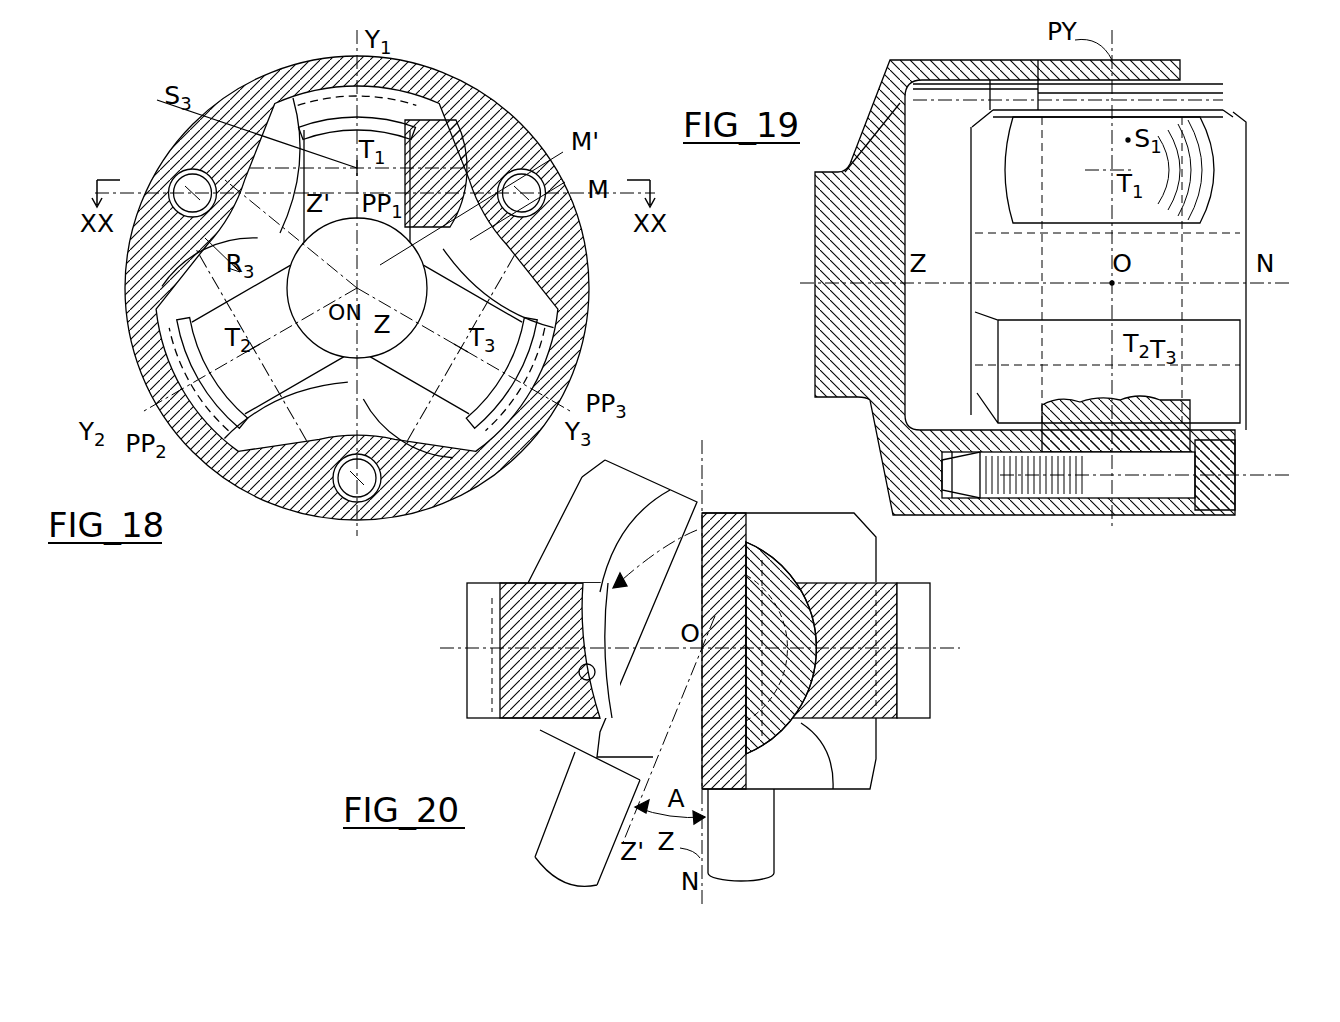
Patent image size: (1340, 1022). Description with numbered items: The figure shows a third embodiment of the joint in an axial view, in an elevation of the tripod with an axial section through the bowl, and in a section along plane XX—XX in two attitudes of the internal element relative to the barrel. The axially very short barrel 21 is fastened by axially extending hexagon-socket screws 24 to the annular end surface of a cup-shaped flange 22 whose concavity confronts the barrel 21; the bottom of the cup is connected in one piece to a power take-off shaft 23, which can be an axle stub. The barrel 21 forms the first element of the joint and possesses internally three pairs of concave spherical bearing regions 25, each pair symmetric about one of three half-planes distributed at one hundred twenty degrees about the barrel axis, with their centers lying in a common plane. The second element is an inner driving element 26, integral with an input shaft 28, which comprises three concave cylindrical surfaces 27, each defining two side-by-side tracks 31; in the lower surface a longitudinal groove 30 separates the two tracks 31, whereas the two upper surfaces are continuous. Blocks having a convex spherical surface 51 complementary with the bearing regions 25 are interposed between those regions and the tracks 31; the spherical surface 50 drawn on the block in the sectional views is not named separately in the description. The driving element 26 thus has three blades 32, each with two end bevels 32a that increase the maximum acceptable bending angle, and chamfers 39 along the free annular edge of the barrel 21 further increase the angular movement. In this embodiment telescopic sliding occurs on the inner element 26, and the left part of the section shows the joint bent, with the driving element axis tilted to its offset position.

In FIG. 19, the barrel 21 is at (1178, 60).
In FIG. 20, the barrel 21 is at (931, 687).
In FIG. 19, the cup-shaped flange 22 is at (948, 62).
In FIG. 19, the power take-off shaft 23 is at (844, 158).
In FIG. 18, the hexagon-socket screws 24 is at (378, 512).
In FIG. 19, the hexagon-socket screws 24 is at (1236, 500).
In FIG. 18, the spherical bearing regions 25 is at (262, 118).
In FIG. 20, the spherical bearing regions 25 is at (547, 725).
In FIG. 18, the inner driving element 26 is at (392, 78).
In FIG. 19, the inner driving element 26 is at (1243, 104).
In FIG. 20, the inner driving element 26 is at (897, 563).
In FIG. 18, the concave cylindrical surfaces 27 is at (272, 92).
In FIG. 20, the input shaft 28 is at (560, 796).
In FIG. 18, the longitudinal groove 30 is at (268, 472).
In FIG. 18, the track 31 is at (508, 138).
In FIG. 19, the track 31 is at (955, 308).
In FIG. 18, the blades 32 is at (208, 354).
In FIG. 19, the blades 32 is at (1135, 104).
In FIG. 20, the blades 32 is at (685, 484).
In FIG. 19, the end bevels 32a is at (1000, 104).
In FIG. 18, the chamfers 39 is at (477, 480).
In FIG. 20, the chamfers 39 is at (700, 500).
In FIG. 18, the spherical surface 50 is at (452, 88).
In FIG. 19, the spherical surface 50 is at (1000, 158).
In FIG. 20, the spherical surface 50 is at (795, 585).
In FIG. 18, the convex spherical surface 51 is at (487, 112).